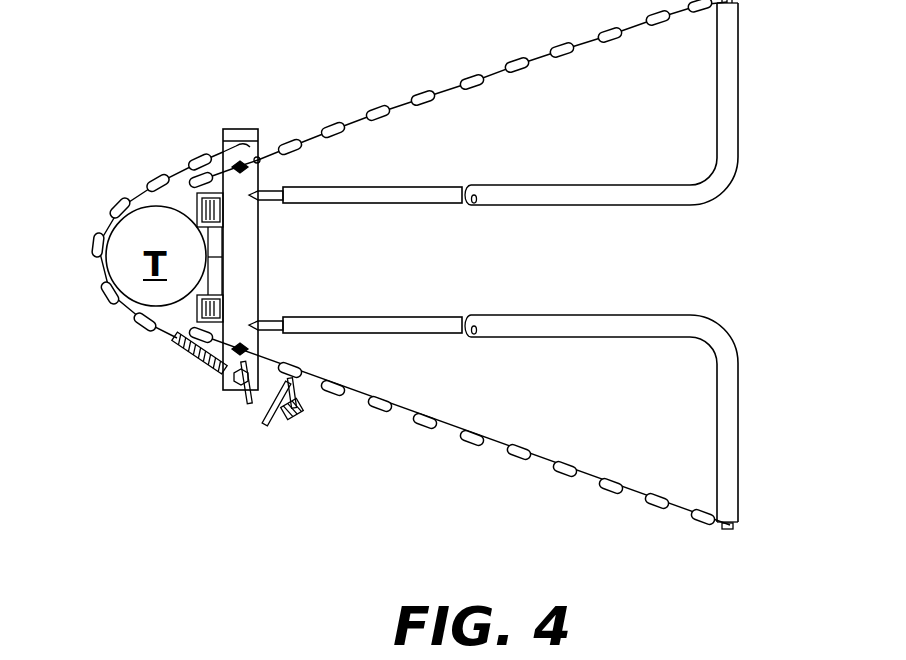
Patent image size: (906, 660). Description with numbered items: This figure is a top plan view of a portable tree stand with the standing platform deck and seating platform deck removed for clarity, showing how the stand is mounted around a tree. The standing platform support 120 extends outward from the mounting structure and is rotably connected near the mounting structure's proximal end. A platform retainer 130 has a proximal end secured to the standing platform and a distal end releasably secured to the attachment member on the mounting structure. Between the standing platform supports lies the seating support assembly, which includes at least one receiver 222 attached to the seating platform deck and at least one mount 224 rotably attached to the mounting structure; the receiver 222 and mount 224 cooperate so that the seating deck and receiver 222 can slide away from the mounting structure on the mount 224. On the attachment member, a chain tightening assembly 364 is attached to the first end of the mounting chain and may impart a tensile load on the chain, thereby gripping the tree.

The platform retainer 130 is at (578, 57).
The standing platform support 120 is at (600, 205).
The receiver 222 is at (382, 203).
The mount 224 is at (283, 203).
The chain tightening assembly 364 is at (176, 373).